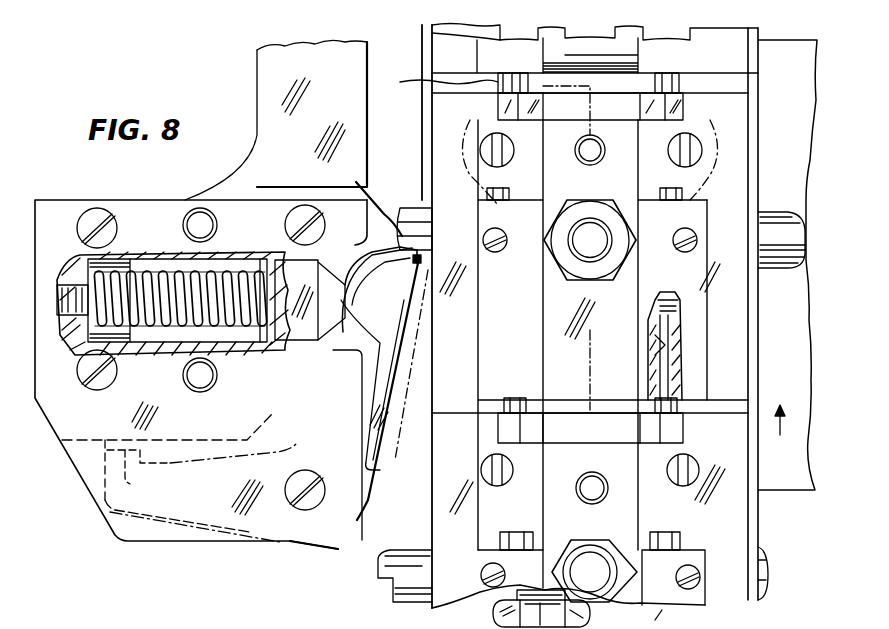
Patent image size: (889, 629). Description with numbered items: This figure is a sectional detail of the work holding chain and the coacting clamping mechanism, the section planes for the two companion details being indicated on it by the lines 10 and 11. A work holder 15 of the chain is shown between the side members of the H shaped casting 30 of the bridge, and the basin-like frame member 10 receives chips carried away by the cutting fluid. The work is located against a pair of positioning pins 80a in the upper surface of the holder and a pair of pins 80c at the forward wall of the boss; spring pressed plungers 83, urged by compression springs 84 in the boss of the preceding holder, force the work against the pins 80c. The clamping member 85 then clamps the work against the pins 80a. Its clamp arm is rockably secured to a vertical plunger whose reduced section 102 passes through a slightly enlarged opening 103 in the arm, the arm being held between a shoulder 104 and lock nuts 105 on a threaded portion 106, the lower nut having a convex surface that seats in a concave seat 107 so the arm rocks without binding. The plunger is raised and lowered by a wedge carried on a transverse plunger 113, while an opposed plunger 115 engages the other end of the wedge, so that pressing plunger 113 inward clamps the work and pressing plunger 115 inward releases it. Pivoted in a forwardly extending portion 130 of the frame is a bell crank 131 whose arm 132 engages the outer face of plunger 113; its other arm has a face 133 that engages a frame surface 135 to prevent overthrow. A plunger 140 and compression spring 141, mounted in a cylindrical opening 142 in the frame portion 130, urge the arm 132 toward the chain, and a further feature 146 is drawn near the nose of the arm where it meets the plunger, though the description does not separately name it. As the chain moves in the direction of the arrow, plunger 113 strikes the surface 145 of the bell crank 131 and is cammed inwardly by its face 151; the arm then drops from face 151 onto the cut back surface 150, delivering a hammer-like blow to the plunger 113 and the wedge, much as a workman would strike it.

The basin-like frame member 10 is at (420, 78).
The section line 11- 11 is at (413, 242).
The work holder 15 is at (735, 527).
The H shaped elongated casting 30 is at (262, 76).
The positioning pins 80a is at (493, 156).
The positioning pins 80c is at (508, 197).
The plungers 83 is at (497, 94).
The compression springs 84 is at (678, 305).
The clamping member 85 is at (558, 327).
The reduced section 102 is at (655, 604).
The enlarged opening 103 is at (672, 619).
The shoulder 104 is at (739, 588).
The lock nuts 105 is at (586, 612).
The threaded portion 106 is at (535, 588).
The concave seat 107 is at (592, 624).
The plunger 113 is at (416, 205).
The plunger 115 is at (806, 212).
The forwardly extending portion of the H frame 130 is at (86, 472).
The bell crank 131 is at (326, 552).
The arm 132 is at (390, 400).
The face 133 is at (128, 481).
The frame surface 135 is at (86, 485).
The plunger 140 is at (292, 252).
The compression spring 141 is at (165, 260).
The cylindrical opening 142 is at (88, 356).
The surface 145 is at (376, 452).
The nose 146 is at (412, 258).
The cut back surface 150 is at (404, 276).
The face 151 is at (360, 184).